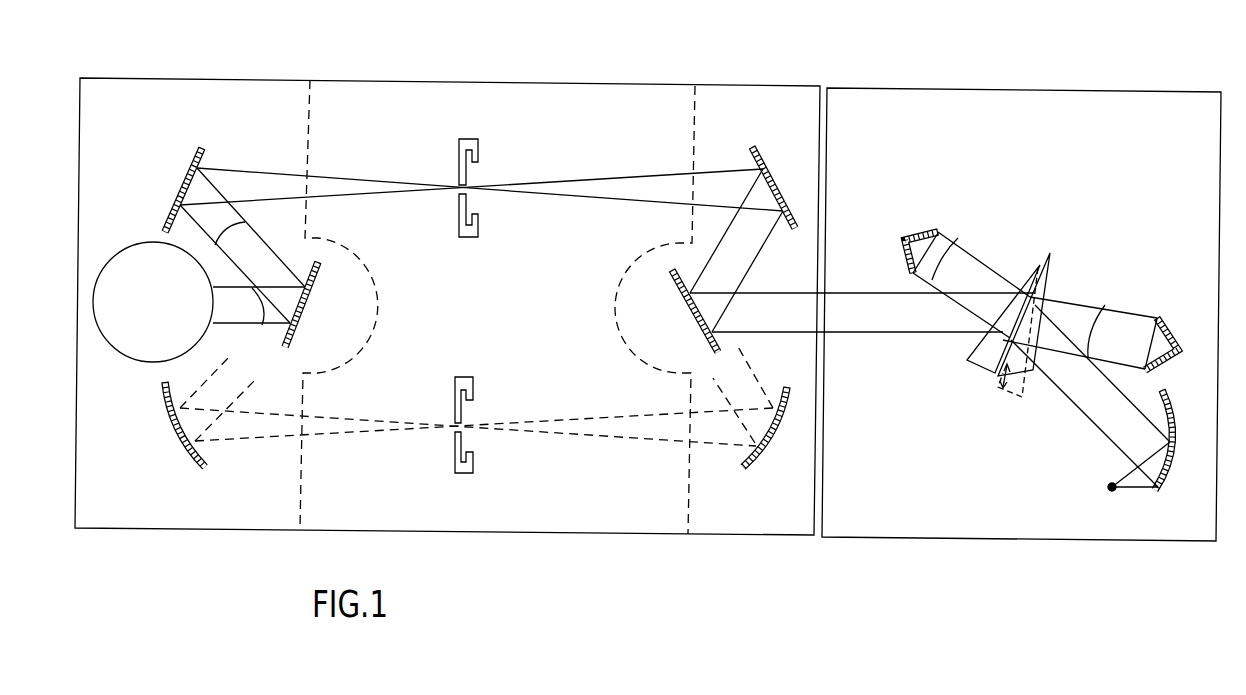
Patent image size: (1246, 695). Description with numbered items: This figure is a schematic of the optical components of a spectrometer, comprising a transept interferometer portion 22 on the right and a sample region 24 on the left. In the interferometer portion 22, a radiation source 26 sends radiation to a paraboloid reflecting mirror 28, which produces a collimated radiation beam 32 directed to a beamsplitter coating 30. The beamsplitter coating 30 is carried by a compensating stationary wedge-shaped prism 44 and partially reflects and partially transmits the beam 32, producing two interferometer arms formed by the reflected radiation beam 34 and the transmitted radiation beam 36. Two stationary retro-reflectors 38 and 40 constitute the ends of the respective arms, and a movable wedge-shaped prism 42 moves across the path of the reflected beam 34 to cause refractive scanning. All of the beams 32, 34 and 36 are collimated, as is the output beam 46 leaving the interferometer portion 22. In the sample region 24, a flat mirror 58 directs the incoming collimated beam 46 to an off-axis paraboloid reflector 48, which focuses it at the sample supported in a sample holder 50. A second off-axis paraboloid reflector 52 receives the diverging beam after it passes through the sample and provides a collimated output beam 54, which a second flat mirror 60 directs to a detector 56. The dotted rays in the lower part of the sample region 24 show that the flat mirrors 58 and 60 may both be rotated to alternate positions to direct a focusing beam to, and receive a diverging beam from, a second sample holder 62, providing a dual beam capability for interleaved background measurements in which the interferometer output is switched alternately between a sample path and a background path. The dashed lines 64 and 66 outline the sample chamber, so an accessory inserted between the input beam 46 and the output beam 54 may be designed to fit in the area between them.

The interferometer portion 22 is at (879, 107).
The sample region 24 is at (344, 98).
The radiation source 26 is at (1106, 486).
The paraboloid reflecting mirror 28 is at (1160, 487).
The beamsplitter coating 30 is at (1038, 271).
The radiation beam 32 is at (1124, 446).
The reflected radiation beam 34 is at (1073, 307).
The transmitted radiation beam 36 is at (959, 246).
The stationary retro-reflector 38 is at (1170, 347).
The stationary retro-reflector 40 is at (910, 236).
The movable wedge-shaped prism 42 is at (1026, 370).
The compensating stationary wedge-shaped prism 44 is at (978, 366).
The output beam 46 is at (731, 225).
The off-axis paraboloid reflector 48 is at (761, 158).
The sample holder 50 is at (458, 142).
The off-axis paraboloid reflector 52 is at (185, 186).
The collimated output beam 54 is at (245, 222).
The detector 56 is at (112, 349).
The flat mirror 58 is at (682, 291).
The flat mirror 60 is at (305, 303).
The second sample holder 62 is at (455, 466).
The dashed line 64 is at (300, 493).
The dashed line 66 is at (690, 483).